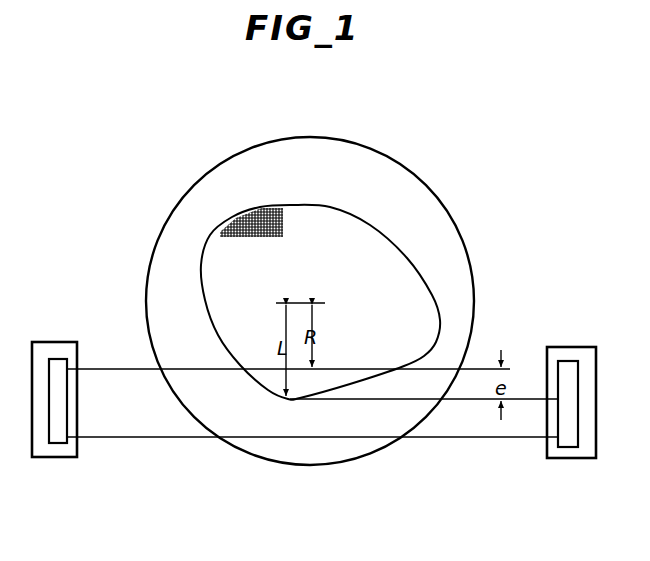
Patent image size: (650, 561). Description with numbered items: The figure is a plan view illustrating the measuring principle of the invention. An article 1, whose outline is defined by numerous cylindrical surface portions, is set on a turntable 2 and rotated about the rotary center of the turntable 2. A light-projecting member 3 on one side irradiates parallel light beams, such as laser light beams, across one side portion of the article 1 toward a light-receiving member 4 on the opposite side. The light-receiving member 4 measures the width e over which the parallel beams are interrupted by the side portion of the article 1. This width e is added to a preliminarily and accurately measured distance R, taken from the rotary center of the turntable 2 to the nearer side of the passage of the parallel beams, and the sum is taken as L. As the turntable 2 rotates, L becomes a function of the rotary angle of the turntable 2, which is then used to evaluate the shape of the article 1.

The article 1 is at (407, 258).
The turntable 2 is at (398, 160).
The light-projecting member 3 is at (54, 342).
The light-receiving member 4 is at (571, 347).